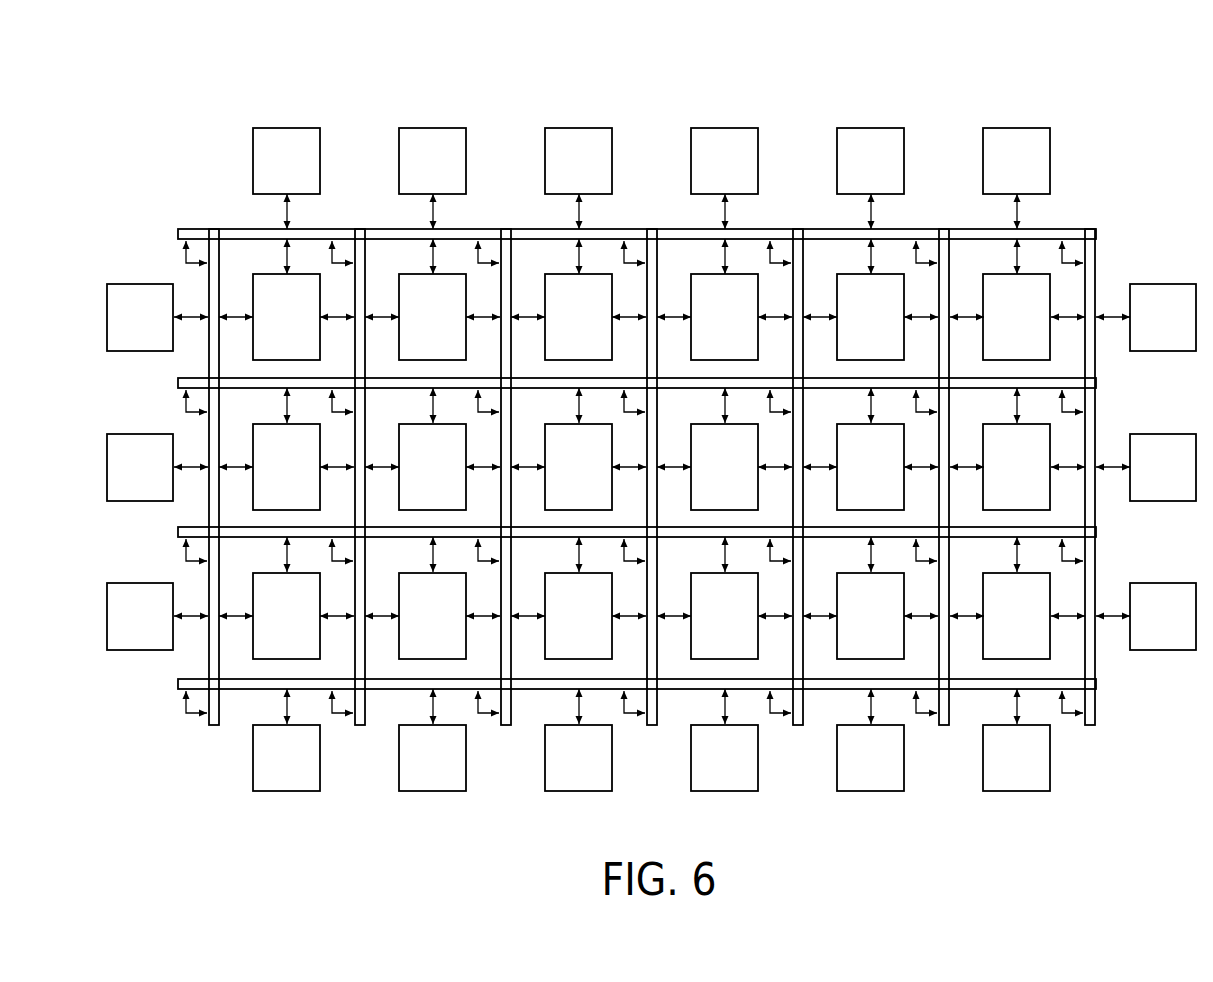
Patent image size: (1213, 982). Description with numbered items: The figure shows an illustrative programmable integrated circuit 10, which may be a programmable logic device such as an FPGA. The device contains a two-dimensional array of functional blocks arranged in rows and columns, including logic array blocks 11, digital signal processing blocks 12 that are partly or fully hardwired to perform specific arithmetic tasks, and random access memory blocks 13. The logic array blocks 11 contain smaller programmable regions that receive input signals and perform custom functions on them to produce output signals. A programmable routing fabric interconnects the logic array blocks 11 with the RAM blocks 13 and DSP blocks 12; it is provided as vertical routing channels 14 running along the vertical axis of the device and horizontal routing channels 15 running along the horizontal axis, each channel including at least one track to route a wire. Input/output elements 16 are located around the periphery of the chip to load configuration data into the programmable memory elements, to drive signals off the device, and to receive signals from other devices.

The programmable integrated circuit 10 is at (226, 70).
The logic array blocks 11 is at (273, 344).
The digital signal processing blocks 12 is at (419, 344).
The random access memory blocks 13 is at (857, 344).
The vertical routing channels 14 is at (357, 725).
The horizontal routing channels 15 is at (828, 690).
The input/output elements 16 is at (320, 154).